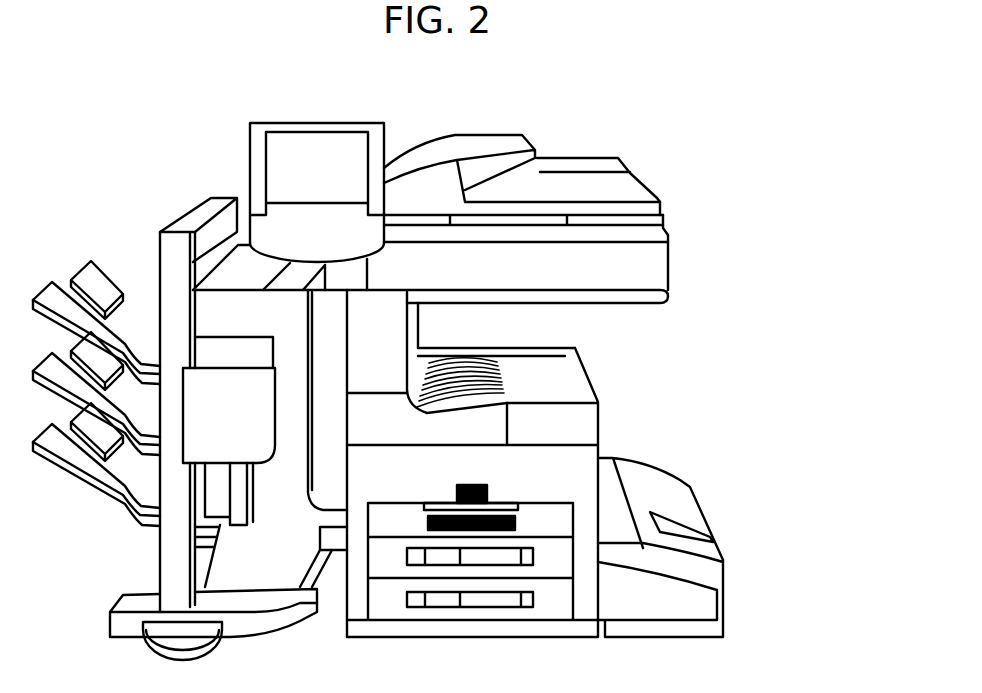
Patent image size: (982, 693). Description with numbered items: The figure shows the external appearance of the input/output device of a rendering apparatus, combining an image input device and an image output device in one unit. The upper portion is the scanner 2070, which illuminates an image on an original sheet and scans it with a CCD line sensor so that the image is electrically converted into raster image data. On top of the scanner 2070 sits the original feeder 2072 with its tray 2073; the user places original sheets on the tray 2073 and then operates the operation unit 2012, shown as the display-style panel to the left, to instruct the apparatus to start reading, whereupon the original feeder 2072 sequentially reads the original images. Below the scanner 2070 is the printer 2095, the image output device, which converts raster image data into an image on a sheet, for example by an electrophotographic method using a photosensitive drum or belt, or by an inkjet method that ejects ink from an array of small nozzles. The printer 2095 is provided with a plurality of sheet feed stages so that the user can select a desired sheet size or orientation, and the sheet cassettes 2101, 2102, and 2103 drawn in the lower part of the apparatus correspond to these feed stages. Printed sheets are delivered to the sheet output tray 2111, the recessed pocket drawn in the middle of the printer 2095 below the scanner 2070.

The operation unit 2012 is at (385, 78).
The scanner 2070 is at (800, 288).
The original feeder 2072 is at (610, 136).
The tray 2073 is at (515, 121).
The printer 2095 is at (784, 290).
The sheet output tray 2111 is at (505, 377).
The sheet cassette 2101 is at (442, 560).
The sheet cassette 2102 is at (555, 603).
The sheet cassette 2103 is at (668, 603).